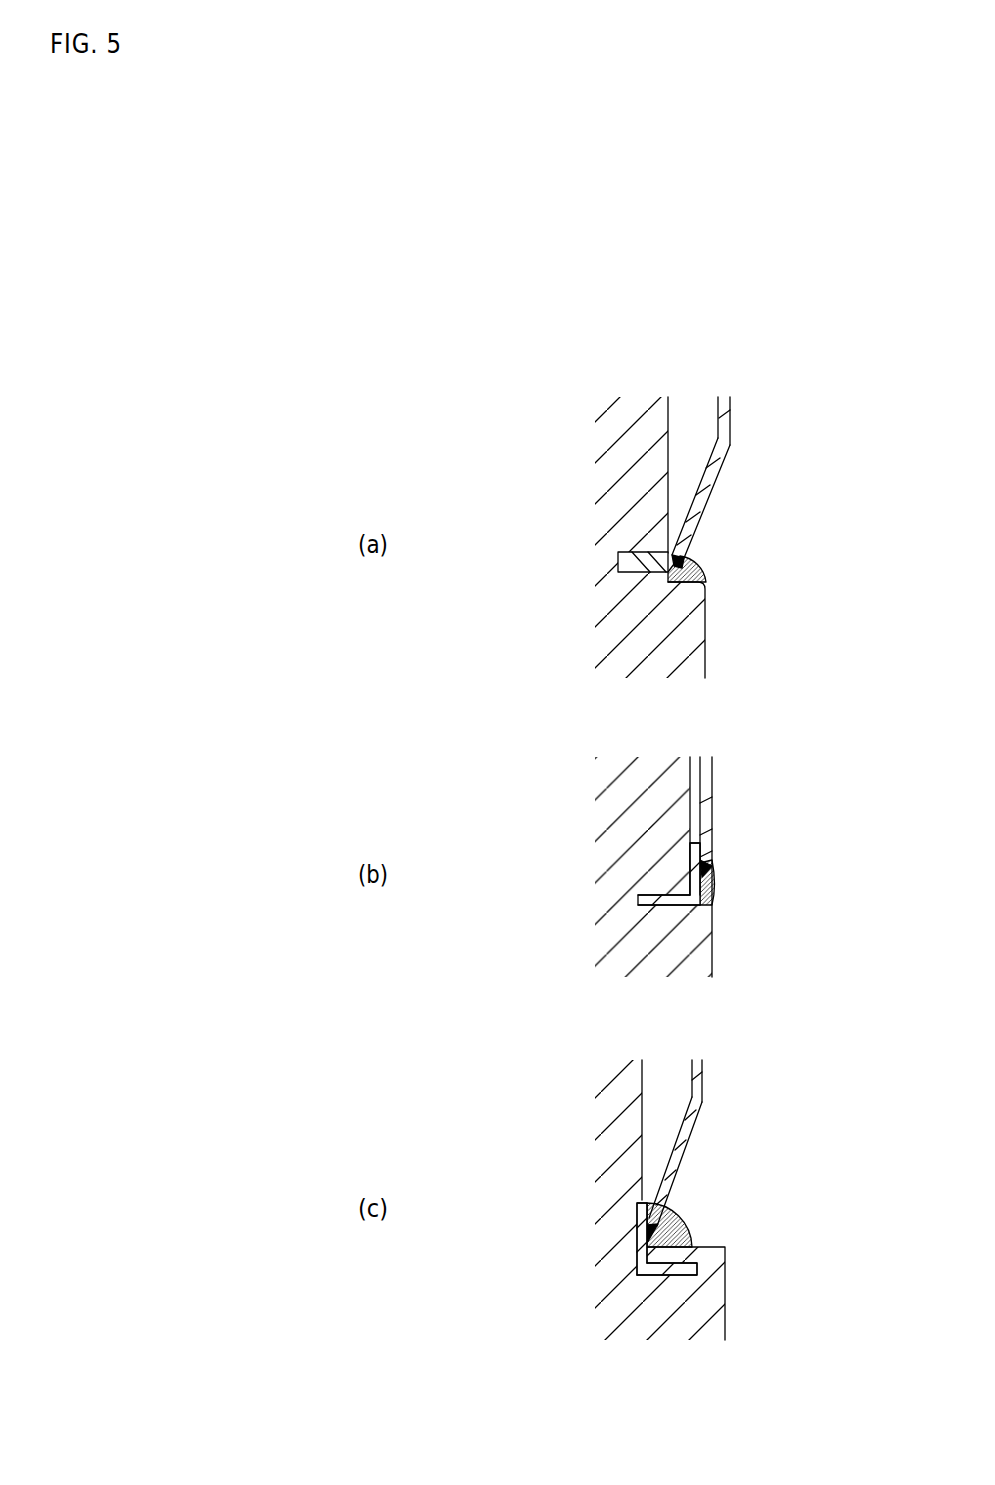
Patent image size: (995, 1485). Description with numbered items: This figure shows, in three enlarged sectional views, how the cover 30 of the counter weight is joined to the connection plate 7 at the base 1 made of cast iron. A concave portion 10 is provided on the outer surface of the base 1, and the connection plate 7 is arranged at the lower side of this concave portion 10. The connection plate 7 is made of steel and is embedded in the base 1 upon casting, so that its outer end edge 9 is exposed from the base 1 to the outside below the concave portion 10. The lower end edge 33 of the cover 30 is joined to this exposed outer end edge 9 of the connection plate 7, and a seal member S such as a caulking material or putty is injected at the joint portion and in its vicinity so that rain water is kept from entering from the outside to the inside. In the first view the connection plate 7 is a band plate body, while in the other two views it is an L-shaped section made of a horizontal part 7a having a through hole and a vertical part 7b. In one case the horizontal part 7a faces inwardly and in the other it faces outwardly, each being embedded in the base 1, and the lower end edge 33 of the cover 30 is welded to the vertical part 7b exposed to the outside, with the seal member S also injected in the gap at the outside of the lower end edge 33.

The base 1 is at (725, 624).
The connection plate 7 is at (616, 568).
The horizontal part 7a is at (650, 903).
The vertical part 7b is at (690, 853).
The outer end edge 9 is at (683, 557).
The concave portion 10 is at (668, 467).
The cover 30 is at (732, 418).
The lower end edge 33 is at (712, 487).
The seal member S is at (697, 568).